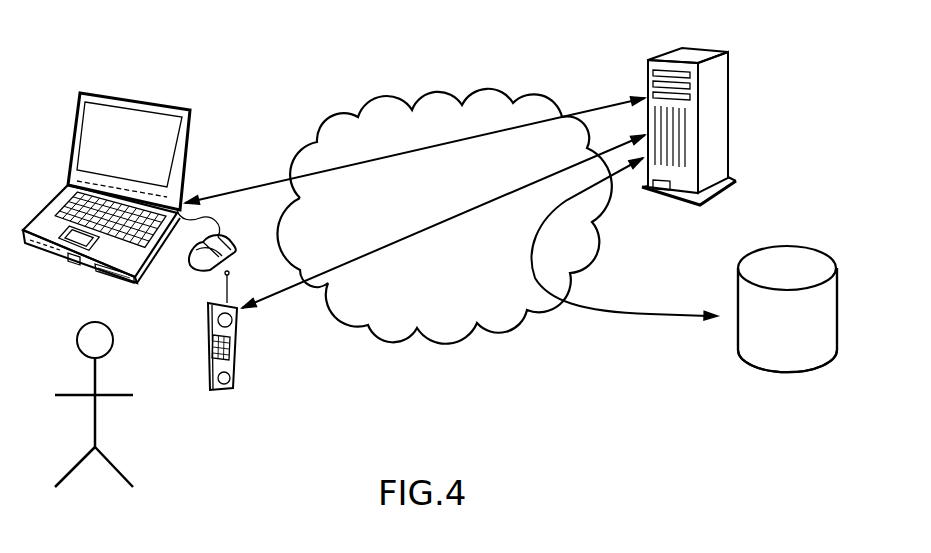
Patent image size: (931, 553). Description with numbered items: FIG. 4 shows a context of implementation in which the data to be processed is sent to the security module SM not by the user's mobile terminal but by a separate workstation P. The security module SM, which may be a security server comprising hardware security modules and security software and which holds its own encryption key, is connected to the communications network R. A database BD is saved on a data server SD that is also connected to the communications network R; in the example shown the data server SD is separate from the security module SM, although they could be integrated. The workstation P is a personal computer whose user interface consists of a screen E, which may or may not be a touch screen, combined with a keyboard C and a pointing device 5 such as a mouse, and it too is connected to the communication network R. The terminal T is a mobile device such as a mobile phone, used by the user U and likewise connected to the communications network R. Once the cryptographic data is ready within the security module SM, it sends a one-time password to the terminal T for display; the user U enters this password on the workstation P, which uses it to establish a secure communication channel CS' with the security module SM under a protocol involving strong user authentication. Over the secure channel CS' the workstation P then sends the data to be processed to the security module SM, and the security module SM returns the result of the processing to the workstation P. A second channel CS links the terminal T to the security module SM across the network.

The workstation P is at (141, 164).
The screen E is at (97, 127).
The keyboard C is at (75, 200).
The mouse 5 is at (233, 250).
The terminal T is at (245, 374).
The user U is at (131, 427).
The communications network R is at (488, 322).
The secure communication channel CS' is at (415, 151).
The communication session with terminal CS is at (443, 221).
The security module SM is at (692, 52).
The data server SD is at (787, 253).
The database BD is at (787, 320).